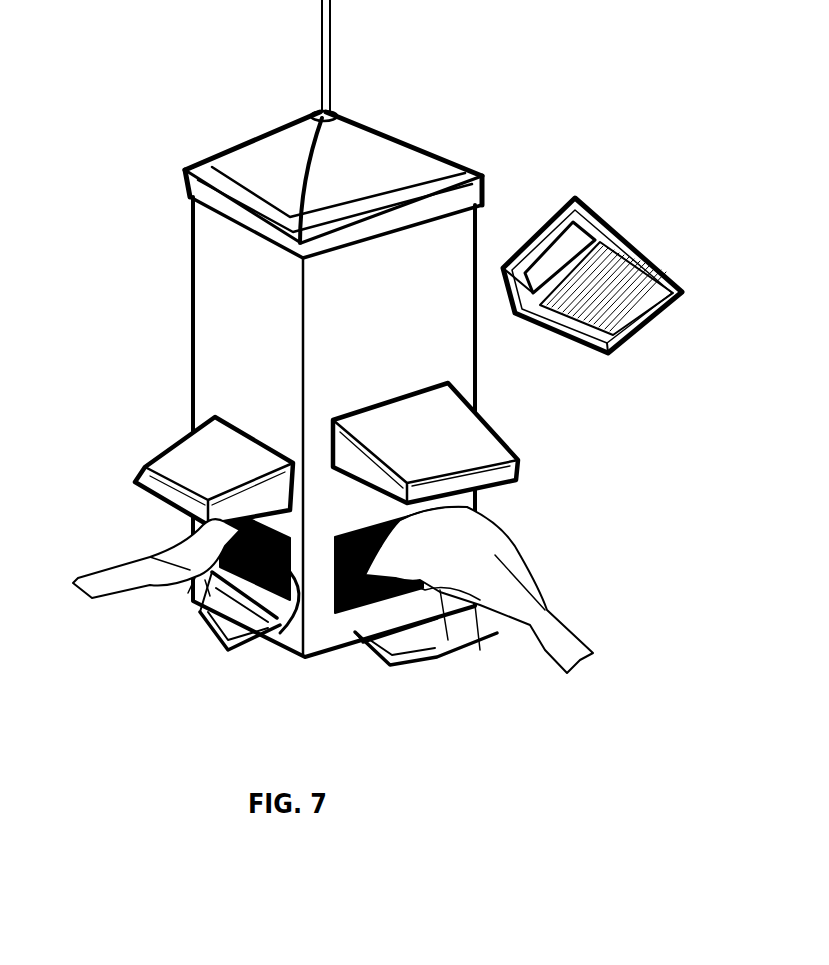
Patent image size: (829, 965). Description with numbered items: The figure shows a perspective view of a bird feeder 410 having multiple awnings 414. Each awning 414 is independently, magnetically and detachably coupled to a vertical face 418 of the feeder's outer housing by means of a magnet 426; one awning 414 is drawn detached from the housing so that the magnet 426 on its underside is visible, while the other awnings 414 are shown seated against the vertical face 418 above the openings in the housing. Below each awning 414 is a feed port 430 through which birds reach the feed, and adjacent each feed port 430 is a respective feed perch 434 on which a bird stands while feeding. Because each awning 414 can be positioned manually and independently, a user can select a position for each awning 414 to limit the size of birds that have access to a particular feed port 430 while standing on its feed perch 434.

The bird feeder 410 is at (375, 361).
The awning 414 is at (463, 437).
The vertical face 418 is at (227, 302).
The magnet 426 is at (562, 243).
The feed port 430 is at (280, 633).
The feed perch 434 is at (403, 663).